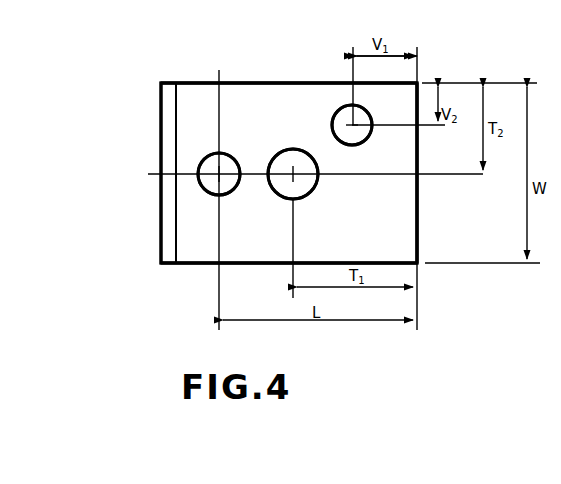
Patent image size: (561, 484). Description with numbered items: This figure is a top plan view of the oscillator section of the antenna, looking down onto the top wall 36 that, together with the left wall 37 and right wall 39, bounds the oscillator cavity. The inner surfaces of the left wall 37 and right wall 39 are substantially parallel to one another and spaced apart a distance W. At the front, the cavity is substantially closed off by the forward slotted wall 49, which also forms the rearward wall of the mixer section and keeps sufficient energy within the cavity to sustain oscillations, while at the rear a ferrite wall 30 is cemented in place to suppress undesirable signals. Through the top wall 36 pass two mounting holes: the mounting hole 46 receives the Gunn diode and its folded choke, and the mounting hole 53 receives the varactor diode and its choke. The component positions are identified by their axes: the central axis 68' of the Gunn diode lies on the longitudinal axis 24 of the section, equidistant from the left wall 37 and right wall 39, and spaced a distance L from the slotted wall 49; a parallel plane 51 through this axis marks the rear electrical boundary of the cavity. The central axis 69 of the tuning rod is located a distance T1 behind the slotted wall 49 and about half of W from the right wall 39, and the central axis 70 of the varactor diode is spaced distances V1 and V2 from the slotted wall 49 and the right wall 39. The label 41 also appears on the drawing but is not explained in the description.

The ferrite wall 30 is at (166, 199).
The top wall 36 is at (262, 250).
The left wall 37 is at (191, 264).
The right wall 39 is at (306, 83).
The forward slotted wall 49 is at (418, 240).
The longitudinal axis 24 is at (404, 176).
The parallel plane 51 is at (219, 101).
The central axis of Gunn diode 68' is at (226, 158).
The mounting hole 46 is at (201, 191).
The central axis of tuning rod 69 is at (300, 167).
The second hole edge 41 is at (306, 194).
The central axis of varactor diode 70 is at (350, 125).
The mounting hole 53 is at (347, 145).